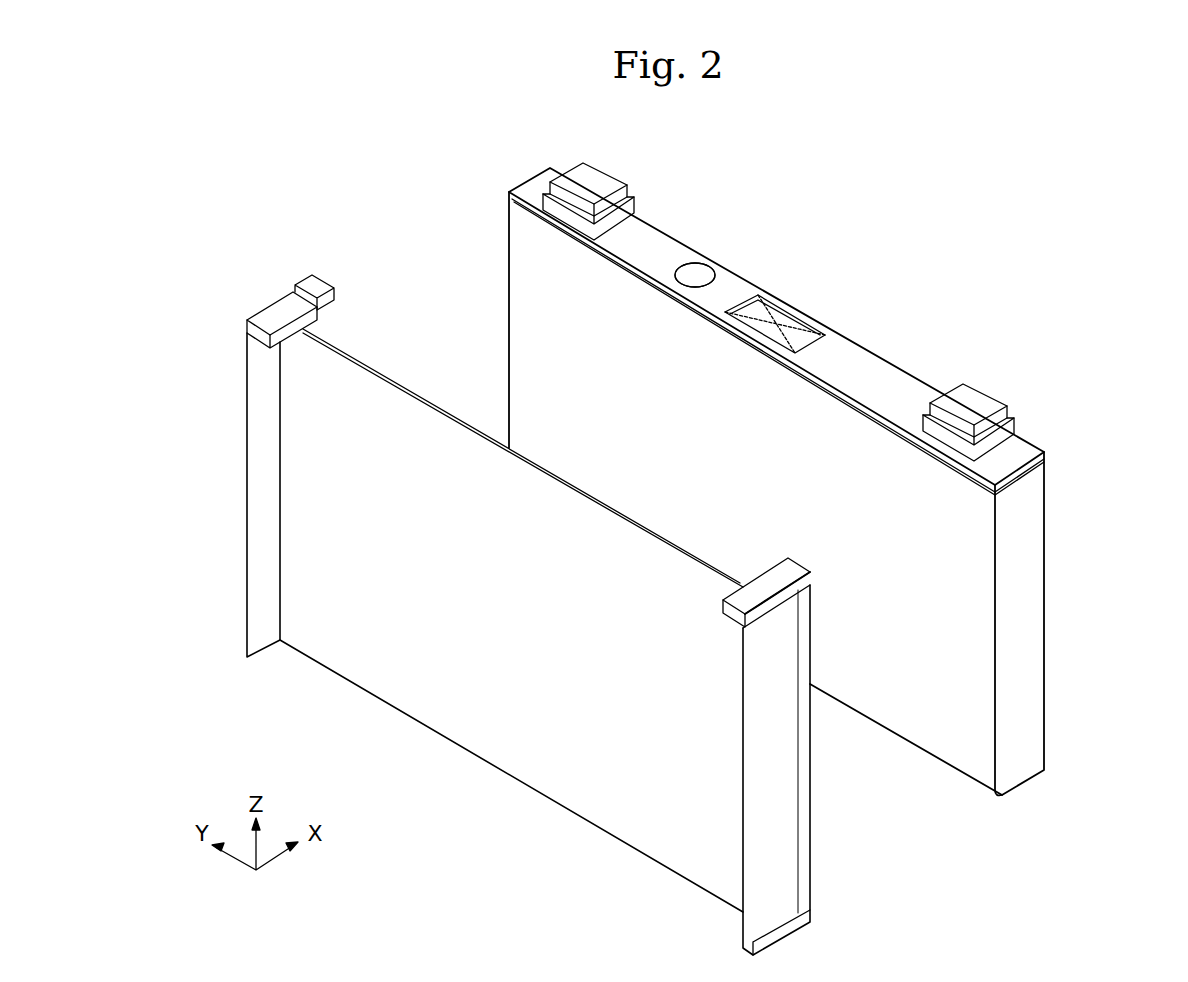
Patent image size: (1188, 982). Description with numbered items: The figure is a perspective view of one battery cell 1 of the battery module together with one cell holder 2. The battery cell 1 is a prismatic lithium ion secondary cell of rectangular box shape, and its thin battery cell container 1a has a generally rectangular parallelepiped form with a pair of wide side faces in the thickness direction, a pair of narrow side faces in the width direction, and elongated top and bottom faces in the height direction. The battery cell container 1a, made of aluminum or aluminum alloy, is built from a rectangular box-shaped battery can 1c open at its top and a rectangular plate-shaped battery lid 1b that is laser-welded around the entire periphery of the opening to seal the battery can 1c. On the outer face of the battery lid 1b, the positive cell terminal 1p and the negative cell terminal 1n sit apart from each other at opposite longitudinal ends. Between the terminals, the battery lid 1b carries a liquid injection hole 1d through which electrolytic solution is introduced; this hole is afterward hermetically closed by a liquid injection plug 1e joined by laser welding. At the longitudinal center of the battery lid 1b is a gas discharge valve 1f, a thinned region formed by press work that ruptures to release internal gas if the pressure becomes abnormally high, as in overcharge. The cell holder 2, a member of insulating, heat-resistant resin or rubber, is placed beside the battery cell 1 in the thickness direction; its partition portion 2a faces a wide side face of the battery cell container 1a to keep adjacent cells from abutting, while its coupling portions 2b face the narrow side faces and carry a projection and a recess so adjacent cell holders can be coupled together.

The battery cell 1 is at (503, 158).
The battery cell container 1a is at (1117, 393).
The battery lid 1b is at (1027, 448).
The battery can 1c is at (1027, 527).
The liquid injection hole 1d is at (710, 269).
The liquid injection plug 1e is at (695, 275).
The gas discharge valve 1f is at (787, 323).
The positive cell terminal 1p is at (592, 182).
The negative cell terminal 1n is at (973, 403).
The cell holder 2 is at (245, 278).
The partition portion 2a is at (388, 382).
The coupling portion 2b is at (243, 547).